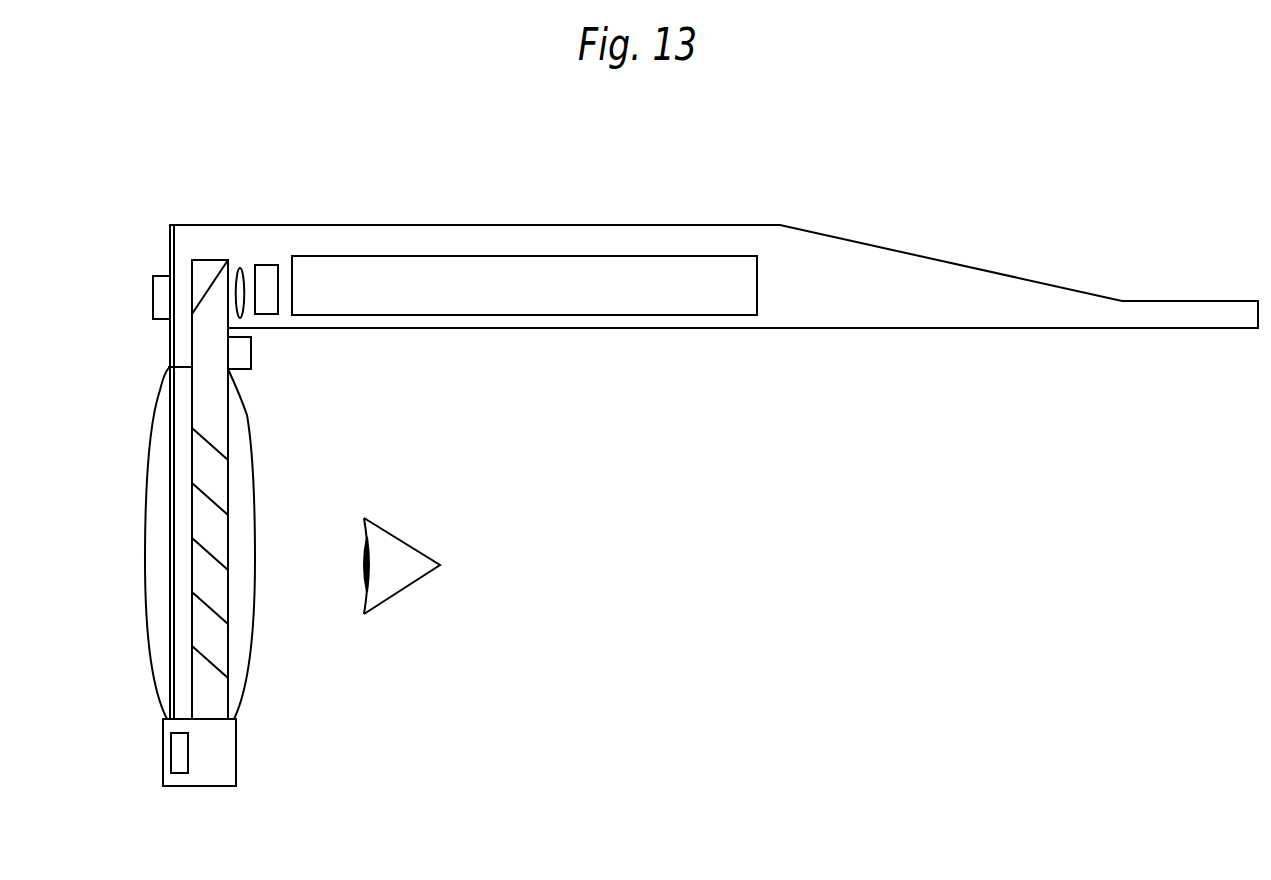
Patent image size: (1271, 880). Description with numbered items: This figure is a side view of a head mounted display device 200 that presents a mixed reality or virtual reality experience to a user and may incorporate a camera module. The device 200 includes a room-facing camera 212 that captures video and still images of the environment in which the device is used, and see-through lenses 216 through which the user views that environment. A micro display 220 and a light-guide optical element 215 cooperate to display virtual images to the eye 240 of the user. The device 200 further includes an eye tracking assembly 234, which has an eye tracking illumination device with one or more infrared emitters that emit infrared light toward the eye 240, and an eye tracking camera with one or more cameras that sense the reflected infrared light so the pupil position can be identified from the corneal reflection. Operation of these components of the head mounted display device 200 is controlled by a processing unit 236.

The head mounted display device 200 is at (177, 138).
The room-facing camera 212 is at (160, 312).
The light-guide optical element 215 is at (213, 427).
The see-through lenses 216 is at (150, 488).
The micro display 220 is at (271, 265).
The eye tracking assembly 234 is at (243, 359).
The processing unit 236 is at (380, 273).
The eye 240 is at (393, 532).